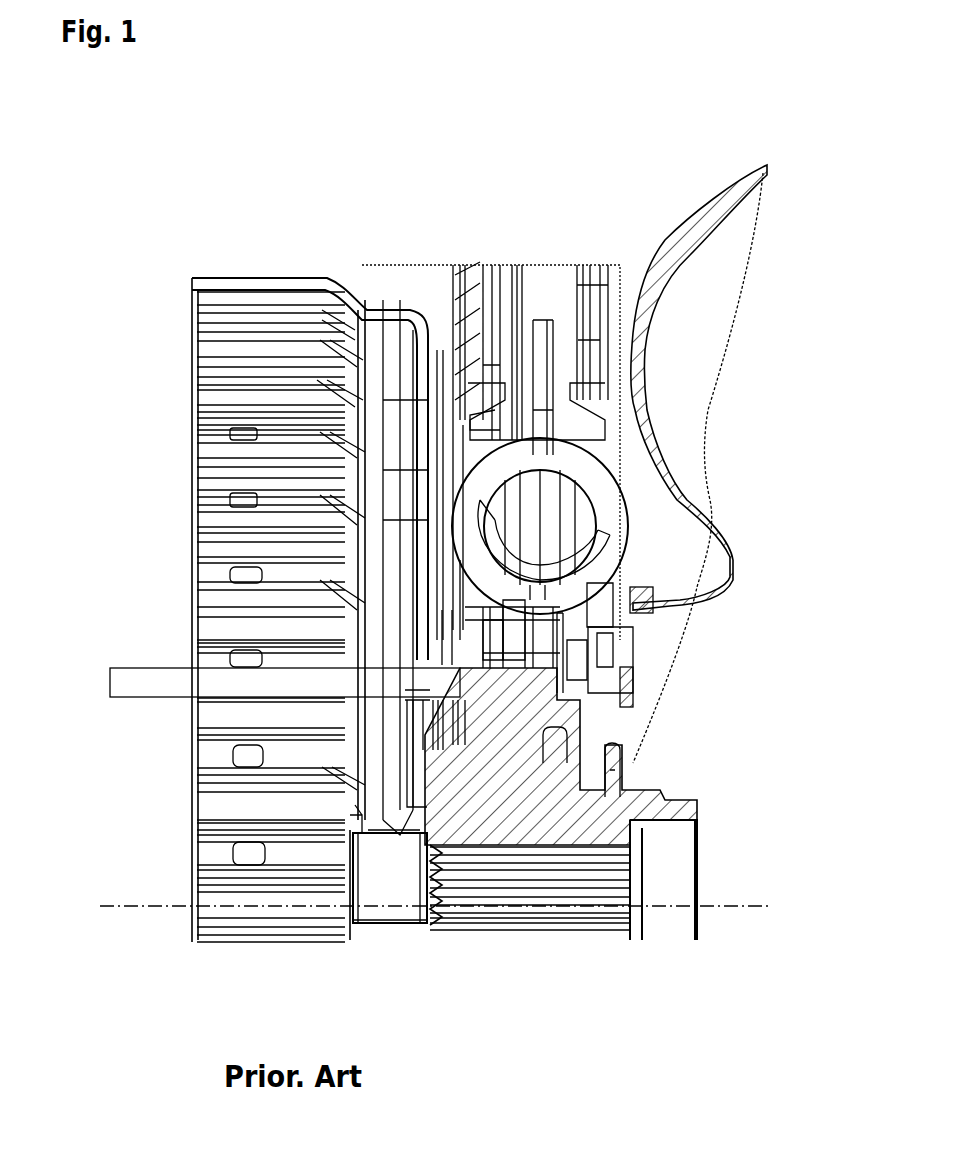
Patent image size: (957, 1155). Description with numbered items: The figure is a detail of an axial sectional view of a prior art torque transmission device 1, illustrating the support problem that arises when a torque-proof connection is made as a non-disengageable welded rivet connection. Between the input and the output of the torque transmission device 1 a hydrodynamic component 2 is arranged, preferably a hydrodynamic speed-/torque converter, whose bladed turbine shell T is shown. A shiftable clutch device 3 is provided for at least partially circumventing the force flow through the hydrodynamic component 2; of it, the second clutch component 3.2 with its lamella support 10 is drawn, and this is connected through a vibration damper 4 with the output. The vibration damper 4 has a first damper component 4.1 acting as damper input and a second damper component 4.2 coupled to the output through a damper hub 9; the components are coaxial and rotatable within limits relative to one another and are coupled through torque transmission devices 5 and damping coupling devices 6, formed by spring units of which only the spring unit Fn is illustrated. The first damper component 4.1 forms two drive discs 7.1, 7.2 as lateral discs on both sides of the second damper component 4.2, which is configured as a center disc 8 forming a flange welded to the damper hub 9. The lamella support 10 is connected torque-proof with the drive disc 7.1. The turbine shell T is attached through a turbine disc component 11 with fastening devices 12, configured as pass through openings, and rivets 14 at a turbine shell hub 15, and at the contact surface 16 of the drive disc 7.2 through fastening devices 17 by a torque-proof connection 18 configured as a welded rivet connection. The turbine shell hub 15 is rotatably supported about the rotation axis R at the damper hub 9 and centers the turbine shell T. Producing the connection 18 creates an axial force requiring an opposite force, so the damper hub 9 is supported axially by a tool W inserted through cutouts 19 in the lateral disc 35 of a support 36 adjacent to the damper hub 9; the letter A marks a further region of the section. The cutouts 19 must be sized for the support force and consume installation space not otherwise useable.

The torque transmission device 1 is at (512, 170).
The hydrodynamic component 2 is at (704, 185).
The shiftable clutch device 3 is at (197, 240).
The second clutch component 3.2 is at (223, 290).
The vibration damper 4 is at (495, 250).
The first damper component 4.1 is at (472, 272).
The second damper component 4.2 is at (543, 345).
The torque transmission device 5 is at (633, 526).
The damping coupling device 6 is at (630, 528).
The drive disc 7.1 is at (470, 270).
The drive disc 7.2 is at (578, 272).
The center disc 8 is at (548, 647).
The damper hub 9 is at (690, 812).
The lamella support 10 is at (190, 293).
The turbine disc component 11 is at (640, 620).
The fastening devices 12 is at (643, 690).
The rivets 14 is at (645, 662).
The turbine shell hub 15 is at (620, 735).
The contact surface 16 is at (650, 603).
The fastening devices 17 is at (655, 658).
The torque-proof connection 18 is at (655, 662).
The cutouts 19 is at (470, 703).
The lateral disc 35 is at (190, 640).
The support 36 is at (527, 637).
The axis of rotation A is at (655, 885).
The spring unit Fn is at (640, 567).
The rotation axis R is at (165, 905).
The turbine shell T is at (737, 247).
The tool W is at (165, 685).